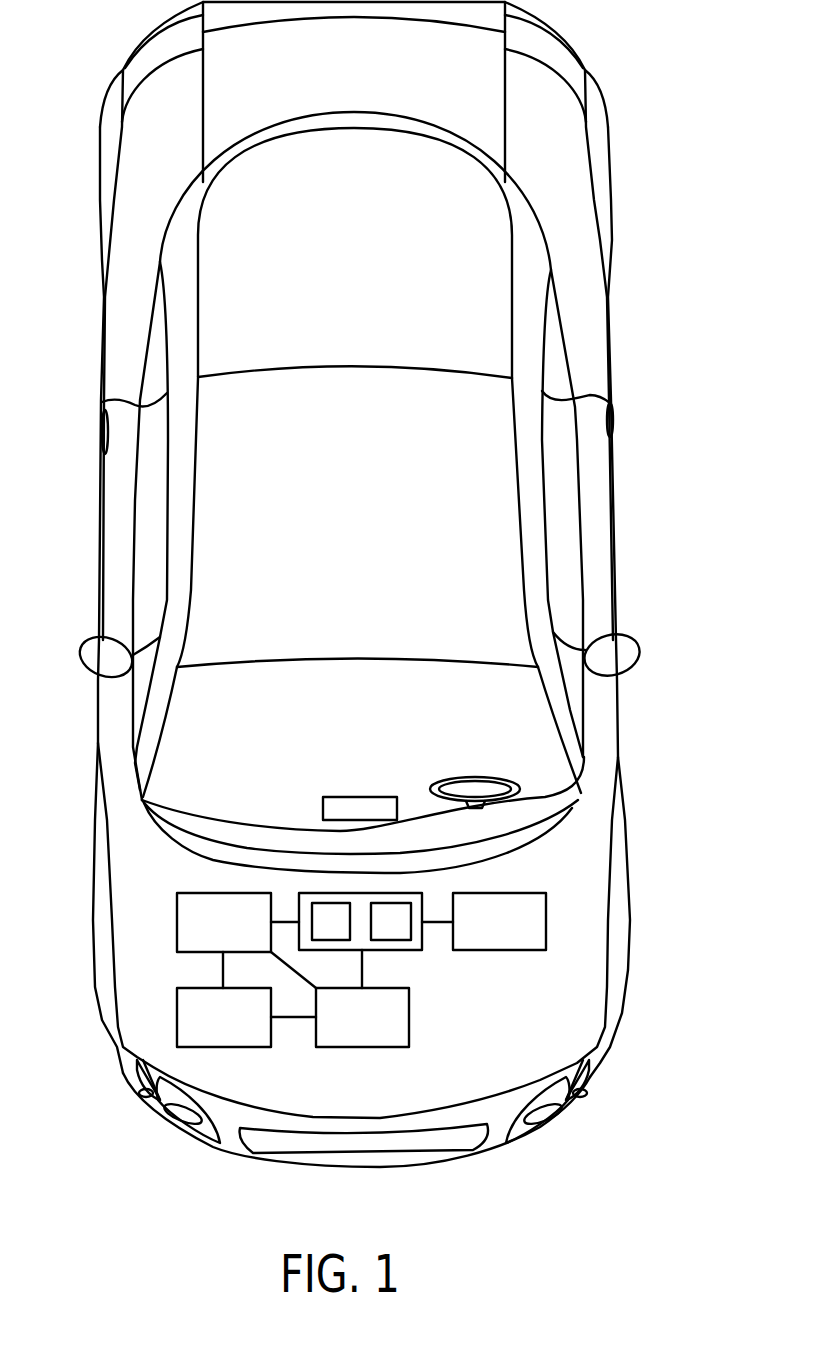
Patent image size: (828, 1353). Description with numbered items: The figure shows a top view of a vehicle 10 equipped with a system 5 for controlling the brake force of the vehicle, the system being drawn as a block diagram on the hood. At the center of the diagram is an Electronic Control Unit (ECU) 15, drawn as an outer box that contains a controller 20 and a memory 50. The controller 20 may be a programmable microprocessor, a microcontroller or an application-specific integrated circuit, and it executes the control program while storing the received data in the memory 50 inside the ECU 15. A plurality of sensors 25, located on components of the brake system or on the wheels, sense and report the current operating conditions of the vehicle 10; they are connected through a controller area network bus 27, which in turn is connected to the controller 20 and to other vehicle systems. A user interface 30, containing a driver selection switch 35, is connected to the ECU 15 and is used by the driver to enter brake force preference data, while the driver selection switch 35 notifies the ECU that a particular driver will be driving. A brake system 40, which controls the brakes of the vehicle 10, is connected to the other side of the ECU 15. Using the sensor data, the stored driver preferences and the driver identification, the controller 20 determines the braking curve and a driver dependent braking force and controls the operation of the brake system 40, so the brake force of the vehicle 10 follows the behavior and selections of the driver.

The system 5 is at (78, 1060).
The vehicle 10 is at (655, 82).
The Electronic Control Unit (ECU) 15 is at (374, 958).
The controller 20 is at (344, 937).
The sensors 25 is at (237, 1033).
The controller area network (CAN) bus 27 is at (376, 1033).
The user interface 30 is at (190, 893).
The driver selection switch 35 is at (237, 938).
The brake system 40 is at (513, 938).
The memory 50 is at (404, 937).